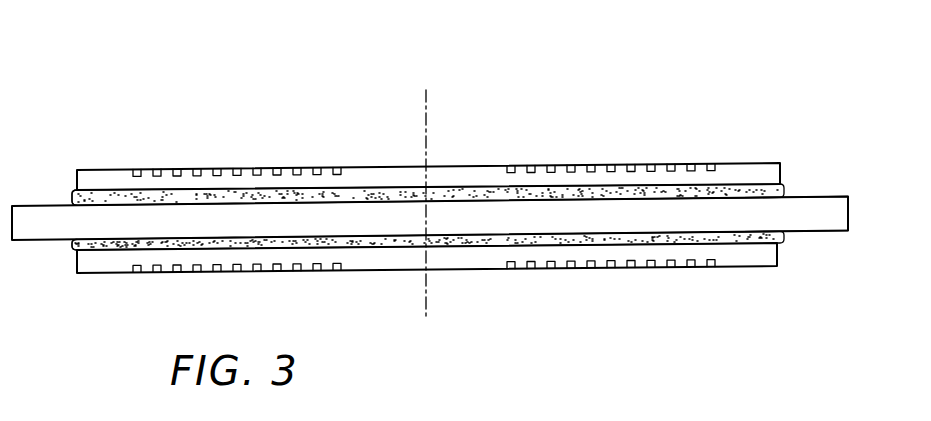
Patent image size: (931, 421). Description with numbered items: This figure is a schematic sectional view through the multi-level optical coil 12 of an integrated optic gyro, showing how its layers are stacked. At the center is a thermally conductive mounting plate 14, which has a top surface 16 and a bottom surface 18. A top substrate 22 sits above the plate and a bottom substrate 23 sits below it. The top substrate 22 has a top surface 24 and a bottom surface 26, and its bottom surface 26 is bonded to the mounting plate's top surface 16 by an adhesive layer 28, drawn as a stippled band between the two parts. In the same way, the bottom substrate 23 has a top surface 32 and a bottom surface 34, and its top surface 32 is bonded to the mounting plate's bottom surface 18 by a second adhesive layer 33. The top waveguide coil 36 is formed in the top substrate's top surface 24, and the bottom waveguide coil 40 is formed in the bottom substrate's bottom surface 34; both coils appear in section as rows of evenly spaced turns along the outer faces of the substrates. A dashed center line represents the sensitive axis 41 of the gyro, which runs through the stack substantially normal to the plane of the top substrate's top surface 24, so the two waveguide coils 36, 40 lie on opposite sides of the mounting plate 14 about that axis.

The multi-level optical coil 12 is at (665, 80).
The mounting plate 14 is at (804, 224).
The top surface 16 is at (800, 195).
The bottom surface 18 is at (800, 232).
The top substrate 22 is at (472, 178).
The bottom substrate 23 is at (473, 258).
The top surface 24 is at (745, 163).
The bottom surface 26 is at (118, 198).
The adhesive layer 28 is at (71, 192).
The top surface 32 is at (97, 246).
The adhesive layer 33 is at (73, 251).
The bottom surface 34 is at (110, 274).
The top waveguide coil 36 is at (220, 168).
The bottom waveguide coil 40 is at (317, 273).
The sensitive axis 41 is at (426, 282).